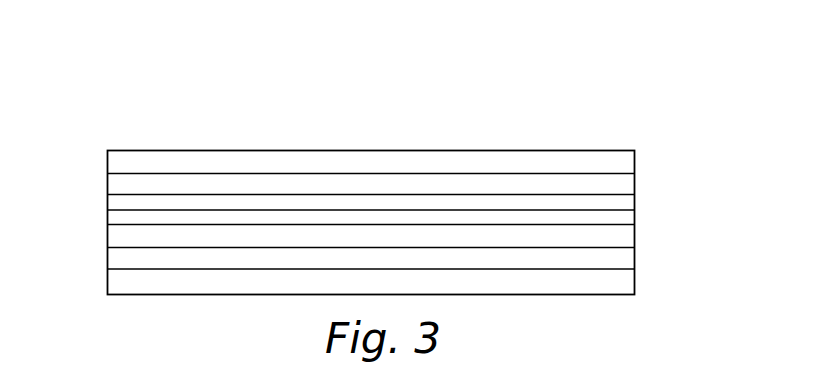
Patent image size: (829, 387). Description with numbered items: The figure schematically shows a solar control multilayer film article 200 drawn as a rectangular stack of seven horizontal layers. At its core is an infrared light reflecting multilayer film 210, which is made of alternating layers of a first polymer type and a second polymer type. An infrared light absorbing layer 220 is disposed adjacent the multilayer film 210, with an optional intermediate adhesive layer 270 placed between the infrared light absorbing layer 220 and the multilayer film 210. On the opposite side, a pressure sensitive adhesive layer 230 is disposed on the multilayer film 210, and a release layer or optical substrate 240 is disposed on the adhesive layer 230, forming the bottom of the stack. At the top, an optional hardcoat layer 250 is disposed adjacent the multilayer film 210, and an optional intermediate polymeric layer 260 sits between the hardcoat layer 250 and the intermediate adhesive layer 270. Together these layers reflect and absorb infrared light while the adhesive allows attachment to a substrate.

The solar control multilayer film article 200 is at (565, 129).
The hardcoat layer 250 is at (622, 164).
The intermediate polymeric layer 260 is at (116, 182).
The infrared light absorbing layer 220 is at (622, 203).
The intermediate adhesive layer 270 is at (118, 220).
The infrared light reflecting multilayer film 210 is at (622, 240).
The adhesive layer 230 is at (117, 262).
The release layer or optical substrate 240 is at (622, 283).